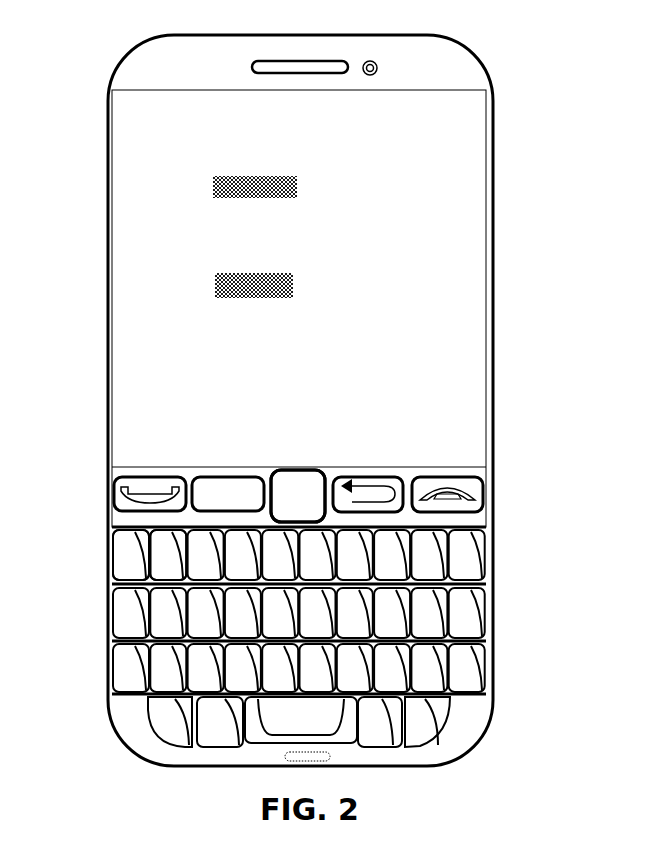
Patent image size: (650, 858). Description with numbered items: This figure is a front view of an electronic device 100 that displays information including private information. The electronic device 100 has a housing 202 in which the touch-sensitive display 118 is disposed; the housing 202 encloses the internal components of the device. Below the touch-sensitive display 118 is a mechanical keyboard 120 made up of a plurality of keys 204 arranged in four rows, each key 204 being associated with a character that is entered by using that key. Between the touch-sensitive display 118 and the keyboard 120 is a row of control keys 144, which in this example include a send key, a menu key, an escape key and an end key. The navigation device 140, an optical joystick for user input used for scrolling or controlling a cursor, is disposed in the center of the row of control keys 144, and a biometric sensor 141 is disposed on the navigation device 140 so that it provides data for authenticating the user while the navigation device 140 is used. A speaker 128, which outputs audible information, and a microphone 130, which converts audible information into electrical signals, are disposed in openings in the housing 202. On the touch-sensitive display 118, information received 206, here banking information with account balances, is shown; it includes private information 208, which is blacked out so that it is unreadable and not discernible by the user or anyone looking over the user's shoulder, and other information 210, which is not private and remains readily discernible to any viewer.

The electronic device 100 is at (178, 800).
The touch-sensitive display 118 is at (108, 232).
The keyboard 120 is at (108, 600).
The speaker 128 is at (305, 63).
The microphone 130 is at (285, 757).
The navigation device 140 is at (300, 492).
The biometric sensor 141 is at (297, 470).
The control keys 144 is at (210, 480).
The housing 202 is at (108, 194).
The keys 204 is at (170, 555).
The information received 206 is at (122, 310).
The private information 208 is at (213, 185).
The other information 210 is at (160, 190).